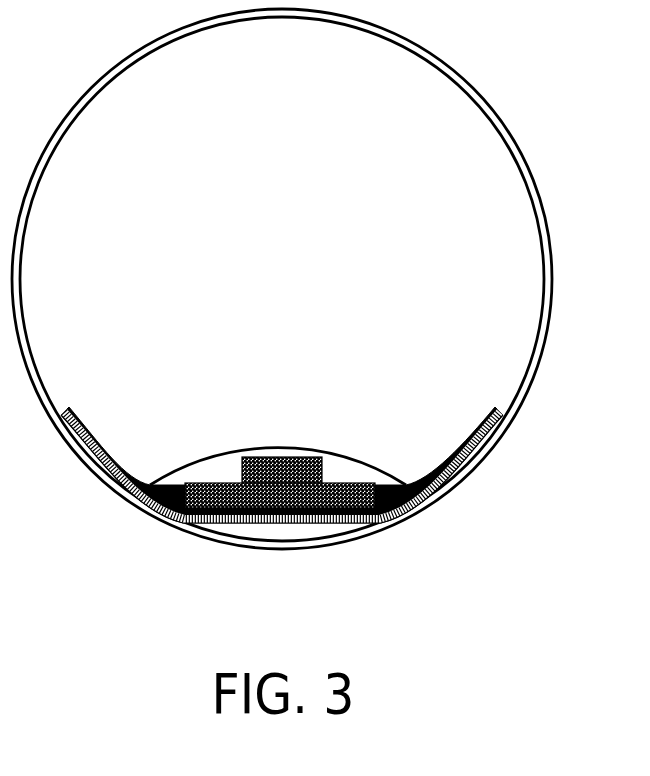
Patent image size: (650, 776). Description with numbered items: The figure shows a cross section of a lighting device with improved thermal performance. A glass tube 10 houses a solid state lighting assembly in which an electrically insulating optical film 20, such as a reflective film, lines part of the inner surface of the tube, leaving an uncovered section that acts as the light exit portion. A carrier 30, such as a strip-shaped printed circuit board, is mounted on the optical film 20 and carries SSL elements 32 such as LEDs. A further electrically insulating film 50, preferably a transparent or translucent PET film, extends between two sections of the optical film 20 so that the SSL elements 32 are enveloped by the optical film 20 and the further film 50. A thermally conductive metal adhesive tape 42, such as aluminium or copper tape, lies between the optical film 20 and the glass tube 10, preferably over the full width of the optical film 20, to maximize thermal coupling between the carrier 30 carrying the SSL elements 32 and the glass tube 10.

The glass tube 10 is at (496, 113).
The electrically insulating optical film 20 is at (472, 437).
The carrier 30 is at (223, 483).
The SSL elements 32 is at (277, 467).
The metal adhesive tape 42 is at (280, 520).
The further electrically insulating film 50 is at (343, 457).